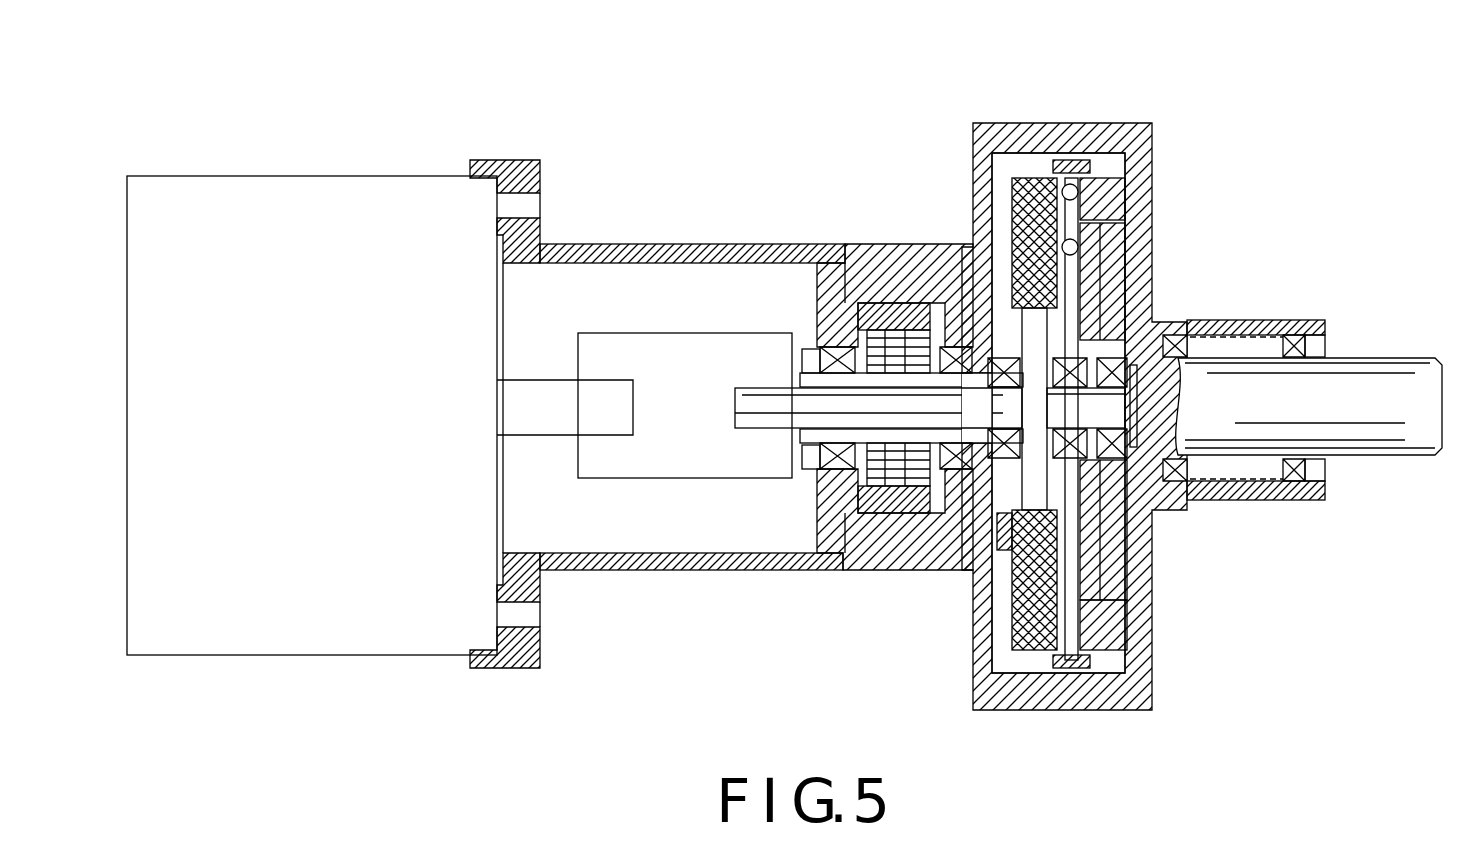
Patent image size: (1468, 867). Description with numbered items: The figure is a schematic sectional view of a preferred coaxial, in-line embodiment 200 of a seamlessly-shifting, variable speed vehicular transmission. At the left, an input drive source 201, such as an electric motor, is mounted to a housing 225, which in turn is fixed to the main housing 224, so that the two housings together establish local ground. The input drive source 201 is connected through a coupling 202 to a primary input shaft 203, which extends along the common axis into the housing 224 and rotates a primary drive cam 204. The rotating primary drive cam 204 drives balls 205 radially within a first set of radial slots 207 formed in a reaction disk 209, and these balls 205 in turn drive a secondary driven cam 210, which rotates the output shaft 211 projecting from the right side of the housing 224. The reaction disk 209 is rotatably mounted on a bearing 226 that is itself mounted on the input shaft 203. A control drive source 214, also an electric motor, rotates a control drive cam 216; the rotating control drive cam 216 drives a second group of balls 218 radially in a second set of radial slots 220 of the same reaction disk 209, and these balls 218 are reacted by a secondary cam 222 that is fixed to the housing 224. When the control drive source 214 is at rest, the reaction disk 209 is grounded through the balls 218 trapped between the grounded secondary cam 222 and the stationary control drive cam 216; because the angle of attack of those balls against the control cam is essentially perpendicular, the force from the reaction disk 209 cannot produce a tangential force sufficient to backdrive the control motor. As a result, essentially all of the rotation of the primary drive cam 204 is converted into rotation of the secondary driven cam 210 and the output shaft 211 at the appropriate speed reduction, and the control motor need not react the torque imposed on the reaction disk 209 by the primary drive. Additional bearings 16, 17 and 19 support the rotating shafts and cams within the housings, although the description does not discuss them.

The coaxial, in-line embodiment 200 is at (470, 106).
The input drive source 201 is at (305, 662).
The coupling 202 is at (627, 484).
The primary input shaft 203 is at (765, 430).
The primary drive cam 204 is at (1033, 197).
The balls 205 is at (1085, 228).
The first set of radial slots 207 is at (1100, 236).
The reaction disk 209 is at (1073, 184).
The secondary driven cam 210 is at (1078, 240).
The output shaft 211 is at (1355, 352).
The control drive source 214 is at (862, 572).
The control drive cam 216 is at (1010, 215).
The balls 218 is at (1048, 178).
The second set of radial slots 220 is at (990, 150).
The secondary cam 222 is at (1085, 165).
The housing 224 is at (1196, 273).
The housing 225 is at (770, 244).
The bearing 226 is at (1110, 530).
The bearing 16 is at (817, 470).
The bearing 17 is at (1000, 472).
The bearing holder 19 is at (1283, 312).